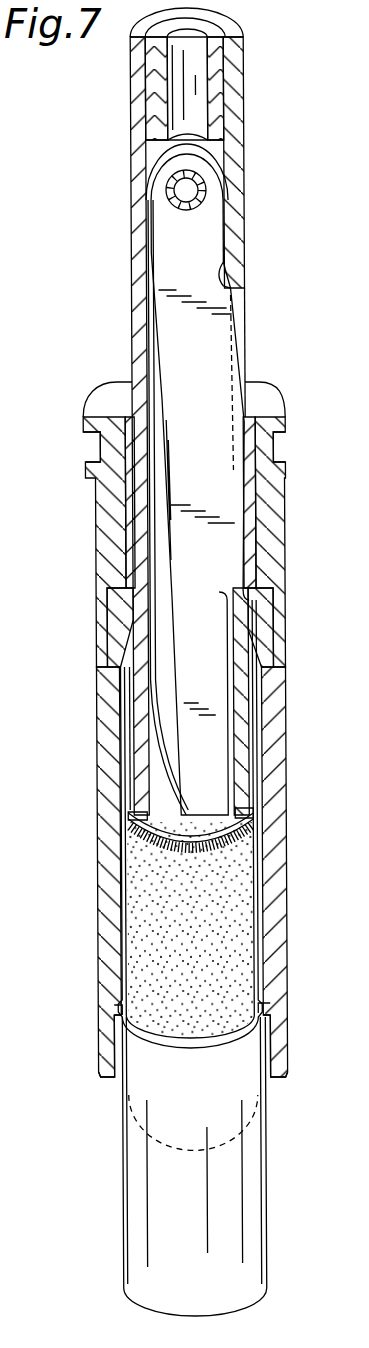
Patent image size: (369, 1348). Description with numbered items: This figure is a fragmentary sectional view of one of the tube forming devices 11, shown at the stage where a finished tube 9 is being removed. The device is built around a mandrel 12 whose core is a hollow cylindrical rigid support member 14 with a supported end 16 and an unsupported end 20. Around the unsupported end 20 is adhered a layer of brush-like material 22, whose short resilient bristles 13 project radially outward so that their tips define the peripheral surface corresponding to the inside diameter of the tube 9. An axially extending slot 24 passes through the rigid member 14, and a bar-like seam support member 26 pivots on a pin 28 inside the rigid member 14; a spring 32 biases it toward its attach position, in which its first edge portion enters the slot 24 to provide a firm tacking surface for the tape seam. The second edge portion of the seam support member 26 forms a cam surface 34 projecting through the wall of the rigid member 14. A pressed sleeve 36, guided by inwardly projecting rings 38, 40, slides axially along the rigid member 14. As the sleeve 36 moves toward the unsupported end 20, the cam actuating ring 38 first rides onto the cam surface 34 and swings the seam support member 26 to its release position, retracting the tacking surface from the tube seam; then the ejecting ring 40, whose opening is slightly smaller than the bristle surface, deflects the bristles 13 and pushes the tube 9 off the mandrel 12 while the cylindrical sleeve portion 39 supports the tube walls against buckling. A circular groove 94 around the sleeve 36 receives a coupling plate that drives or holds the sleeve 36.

The tube 9 is at (233, 1197).
The device 11 is at (90, 813).
The mandrel 12 is at (150, 905).
The bristles 13 is at (228, 905).
The rigid support member 14 is at (236, 242).
The end 16 is at (218, 86).
The unsupported end 20 is at (177, 1152).
The layer of brush-like material 22 is at (148, 955).
The slot 24 is at (247, 815).
The seam support member 26 is at (204, 663).
The pin 28 is at (205, 186).
The spring 32 is at (167, 783).
The cam surface 34 is at (235, 352).
The sleeve 36 is at (93, 520).
The cam actuating ring 38 is at (115, 608).
The cylindrical sleeve portion 39 is at (106, 1050).
The ejecting ring 40 is at (116, 1006).
The circular groove 94 is at (100, 443).